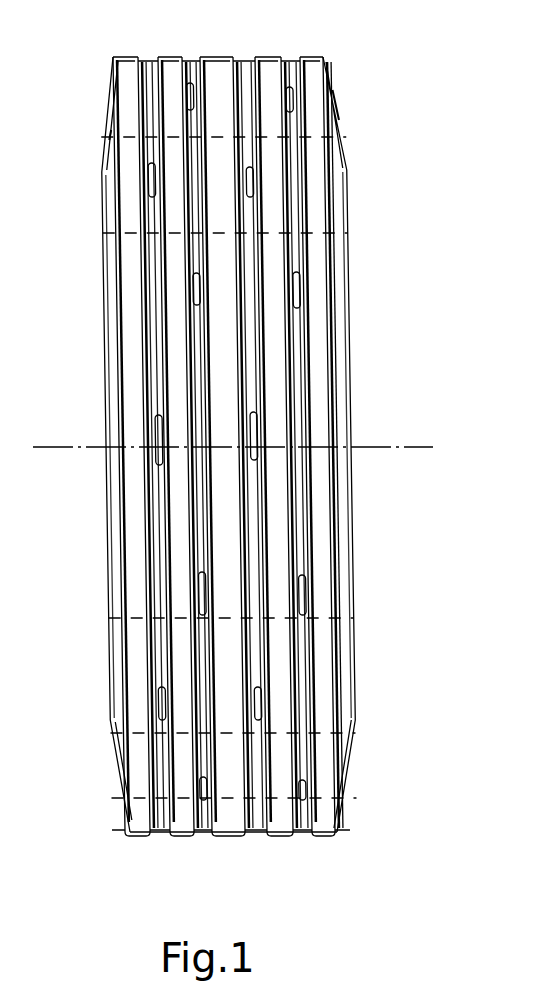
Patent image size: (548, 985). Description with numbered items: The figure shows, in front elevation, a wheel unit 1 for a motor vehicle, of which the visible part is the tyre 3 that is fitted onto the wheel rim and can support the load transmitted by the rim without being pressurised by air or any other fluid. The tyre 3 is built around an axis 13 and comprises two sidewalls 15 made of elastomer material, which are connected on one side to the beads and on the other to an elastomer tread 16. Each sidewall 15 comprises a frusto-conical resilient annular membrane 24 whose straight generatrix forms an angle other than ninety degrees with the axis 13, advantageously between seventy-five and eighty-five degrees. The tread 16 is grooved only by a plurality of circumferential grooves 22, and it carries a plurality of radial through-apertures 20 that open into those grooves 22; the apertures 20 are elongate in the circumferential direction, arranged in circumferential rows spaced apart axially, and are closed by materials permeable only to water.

The wheel unit 1 is at (406, 202).
The tyre 3 is at (362, 767).
The axis 13 is at (400, 446).
The sidewalls 15 is at (97, 114).
The tread 16 is at (210, 50).
The radial through-apertures 20 is at (296, 290).
The circumferential grooves 22 is at (185, 50).
The frusto-conical resilient annular membrane 24 is at (333, 350).